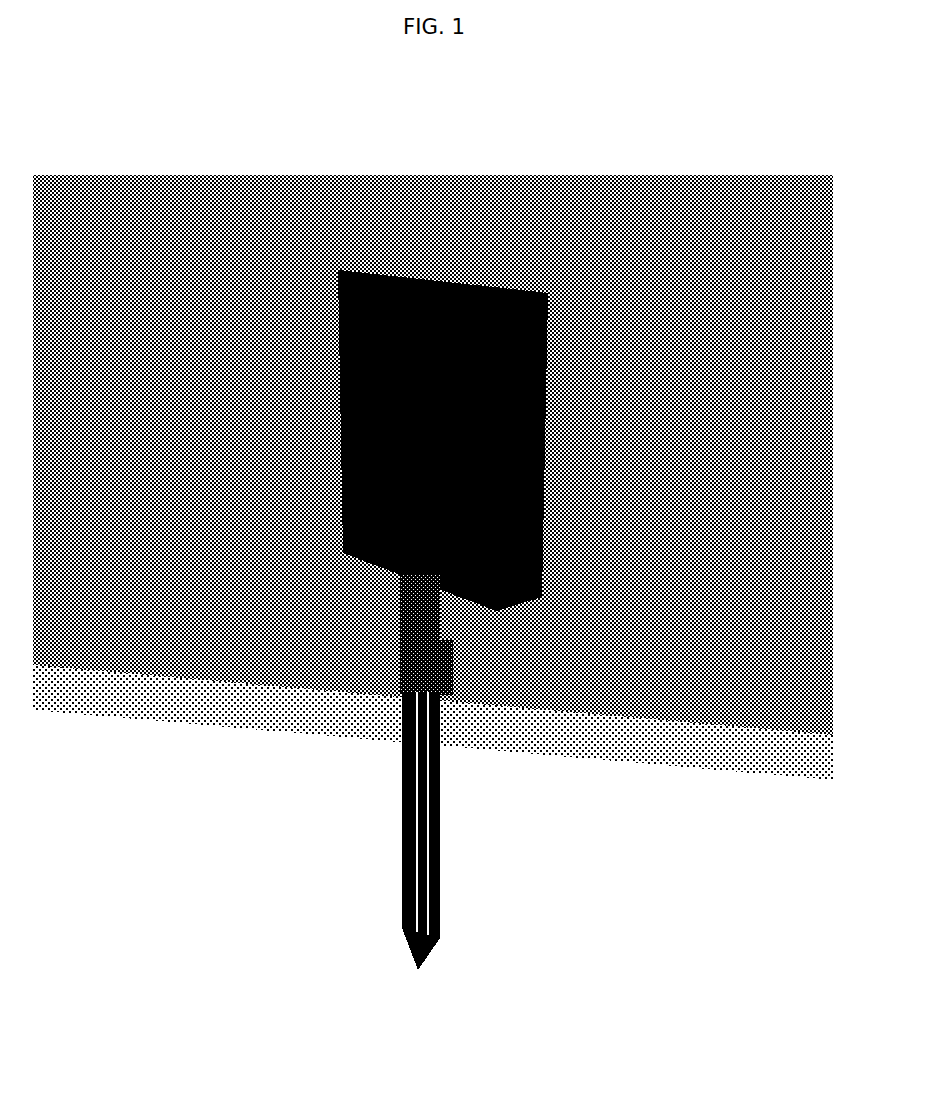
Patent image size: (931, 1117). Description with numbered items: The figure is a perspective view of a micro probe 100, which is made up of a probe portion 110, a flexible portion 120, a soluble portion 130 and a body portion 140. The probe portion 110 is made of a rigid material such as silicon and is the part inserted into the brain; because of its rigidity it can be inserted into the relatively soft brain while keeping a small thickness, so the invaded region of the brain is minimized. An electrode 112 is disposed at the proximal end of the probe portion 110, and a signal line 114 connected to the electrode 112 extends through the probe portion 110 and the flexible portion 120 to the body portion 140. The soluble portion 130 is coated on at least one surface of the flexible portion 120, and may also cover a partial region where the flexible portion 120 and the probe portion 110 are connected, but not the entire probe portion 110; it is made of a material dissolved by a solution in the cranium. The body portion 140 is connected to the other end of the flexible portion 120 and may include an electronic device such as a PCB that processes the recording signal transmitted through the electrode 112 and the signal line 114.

The micro probe 100 is at (243, 367).
The body portion 140 is at (547, 432).
The flexible portion 120 is at (445, 642).
The soluble portion 130 is at (448, 697).
The probe portion 110 is at (413, 831).
The signal line 114 is at (400, 785).
The electrode 112 is at (405, 928).